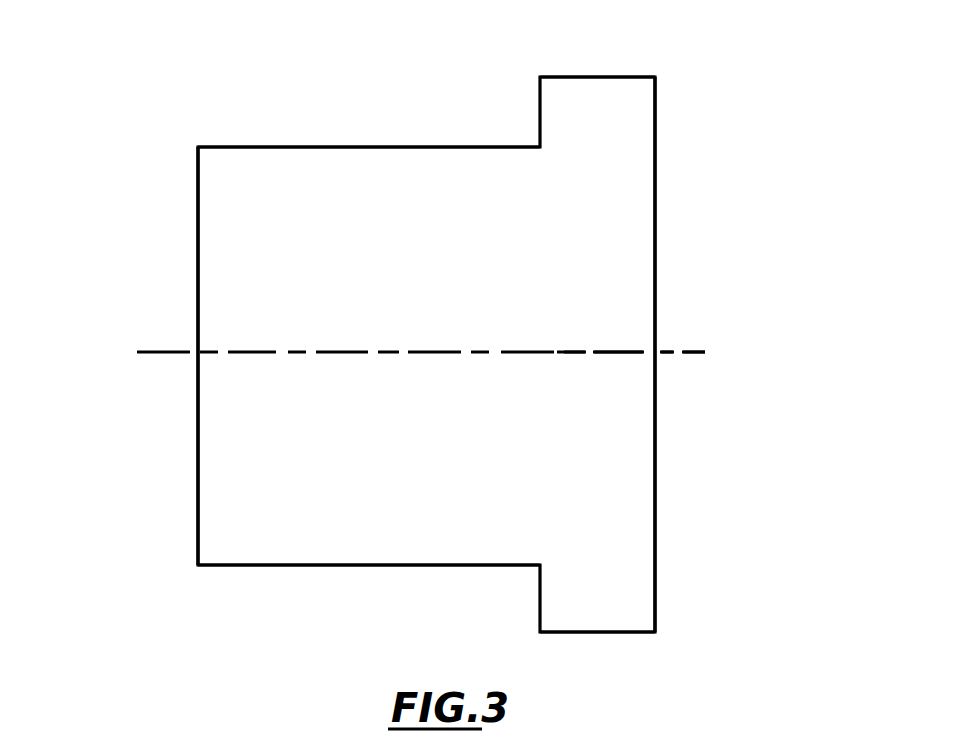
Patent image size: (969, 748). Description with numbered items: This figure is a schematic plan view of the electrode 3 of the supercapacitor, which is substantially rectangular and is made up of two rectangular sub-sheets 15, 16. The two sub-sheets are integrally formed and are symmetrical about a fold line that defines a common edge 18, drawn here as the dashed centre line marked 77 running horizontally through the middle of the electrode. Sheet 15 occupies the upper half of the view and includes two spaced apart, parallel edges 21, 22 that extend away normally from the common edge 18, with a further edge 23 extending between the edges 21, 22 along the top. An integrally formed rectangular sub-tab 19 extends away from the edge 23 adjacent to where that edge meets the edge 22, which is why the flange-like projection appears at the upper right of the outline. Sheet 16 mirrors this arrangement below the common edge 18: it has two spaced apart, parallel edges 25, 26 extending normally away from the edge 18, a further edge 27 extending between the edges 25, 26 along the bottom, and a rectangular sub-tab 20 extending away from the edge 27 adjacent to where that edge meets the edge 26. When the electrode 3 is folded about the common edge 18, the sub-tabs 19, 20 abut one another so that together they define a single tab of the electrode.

The electrode 3 is at (678, 241).
The sub-sheet 15 is at (425, 271).
The sub-sheet 16 is at (420, 475).
The common edge 18 is at (557, 350).
The sub-tab 19 is at (583, 90).
The sub-tab 20 is at (595, 597).
The edge 21 is at (198, 193).
The edge 22 is at (655, 163).
The edge 23 is at (308, 147).
The edge 25 is at (198, 510).
The edge 26 is at (655, 493).
The edge 27 is at (317, 565).
The center line 77 is at (160, 351).